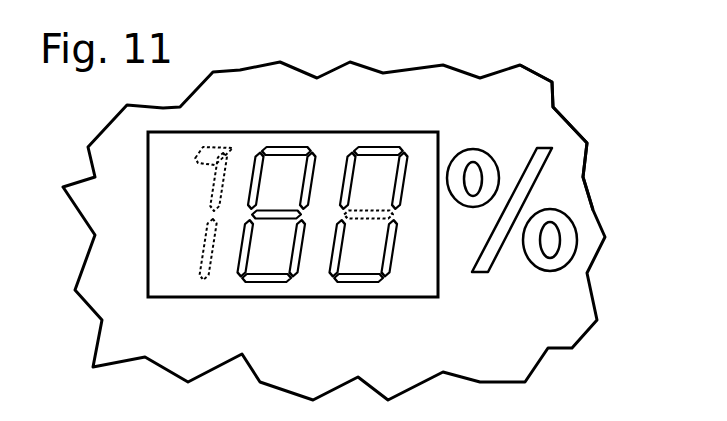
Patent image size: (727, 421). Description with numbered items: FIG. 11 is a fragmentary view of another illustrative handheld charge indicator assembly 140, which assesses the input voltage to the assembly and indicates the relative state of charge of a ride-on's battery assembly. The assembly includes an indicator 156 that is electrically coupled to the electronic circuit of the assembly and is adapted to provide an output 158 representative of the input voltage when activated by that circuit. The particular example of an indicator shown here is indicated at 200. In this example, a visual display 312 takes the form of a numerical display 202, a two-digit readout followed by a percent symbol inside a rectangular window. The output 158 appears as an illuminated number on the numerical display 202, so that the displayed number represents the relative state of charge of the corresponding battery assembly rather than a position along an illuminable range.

The handheld charge indicator assembly 140 is at (590, 87).
The indicator 156 is at (467, 60).
The indicator 200 is at (334, 117).
The output 158 is at (292, 311).
The numerical display 202 is at (367, 307).
The visual display 312 is at (242, 325).